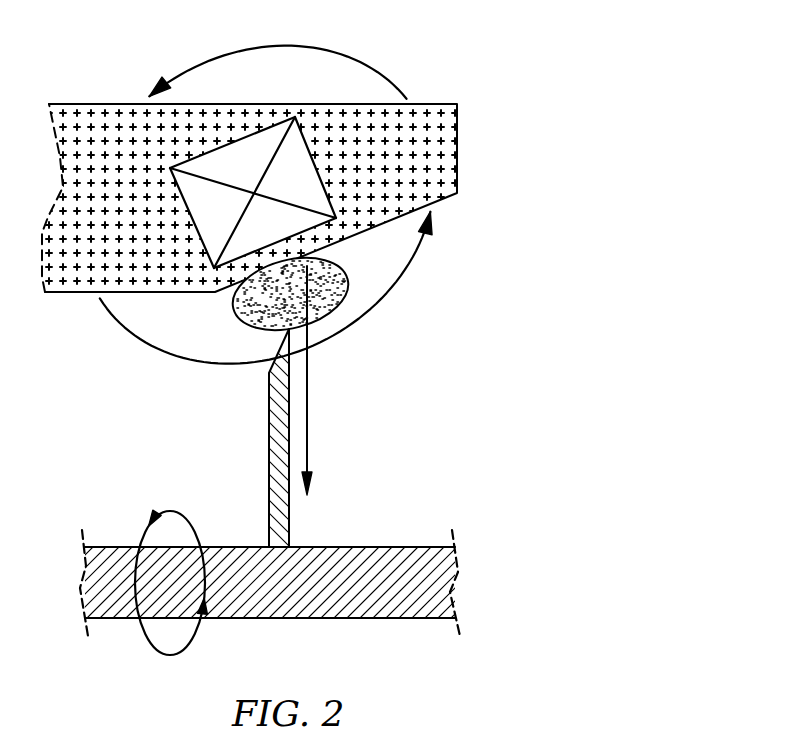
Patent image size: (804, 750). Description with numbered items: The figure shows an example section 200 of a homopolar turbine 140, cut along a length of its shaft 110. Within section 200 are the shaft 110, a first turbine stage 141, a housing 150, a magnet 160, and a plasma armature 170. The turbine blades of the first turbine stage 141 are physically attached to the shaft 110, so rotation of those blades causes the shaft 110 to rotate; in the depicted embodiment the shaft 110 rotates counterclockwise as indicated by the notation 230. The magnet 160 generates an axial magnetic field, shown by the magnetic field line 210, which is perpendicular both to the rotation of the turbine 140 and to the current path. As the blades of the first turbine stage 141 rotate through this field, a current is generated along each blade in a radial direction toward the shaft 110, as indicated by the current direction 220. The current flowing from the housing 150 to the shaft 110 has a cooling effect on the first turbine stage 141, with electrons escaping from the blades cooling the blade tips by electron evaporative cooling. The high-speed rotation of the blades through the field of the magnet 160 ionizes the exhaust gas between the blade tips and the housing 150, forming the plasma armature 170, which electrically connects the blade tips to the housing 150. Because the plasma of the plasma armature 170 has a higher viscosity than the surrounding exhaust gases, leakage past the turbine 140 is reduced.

The section 200 is at (434, 40).
The housing 150 is at (458, 141).
The magnet 160 is at (254, 136).
The plasma armature 170 is at (346, 274).
The magnetic field line 210 is at (371, 317).
The current direction 220 is at (308, 440).
The first turbine stage 141 is at (269, 439).
The turbine 140 is at (274, 500).
The shaft 110 is at (337, 619).
The notation 230 is at (191, 638).